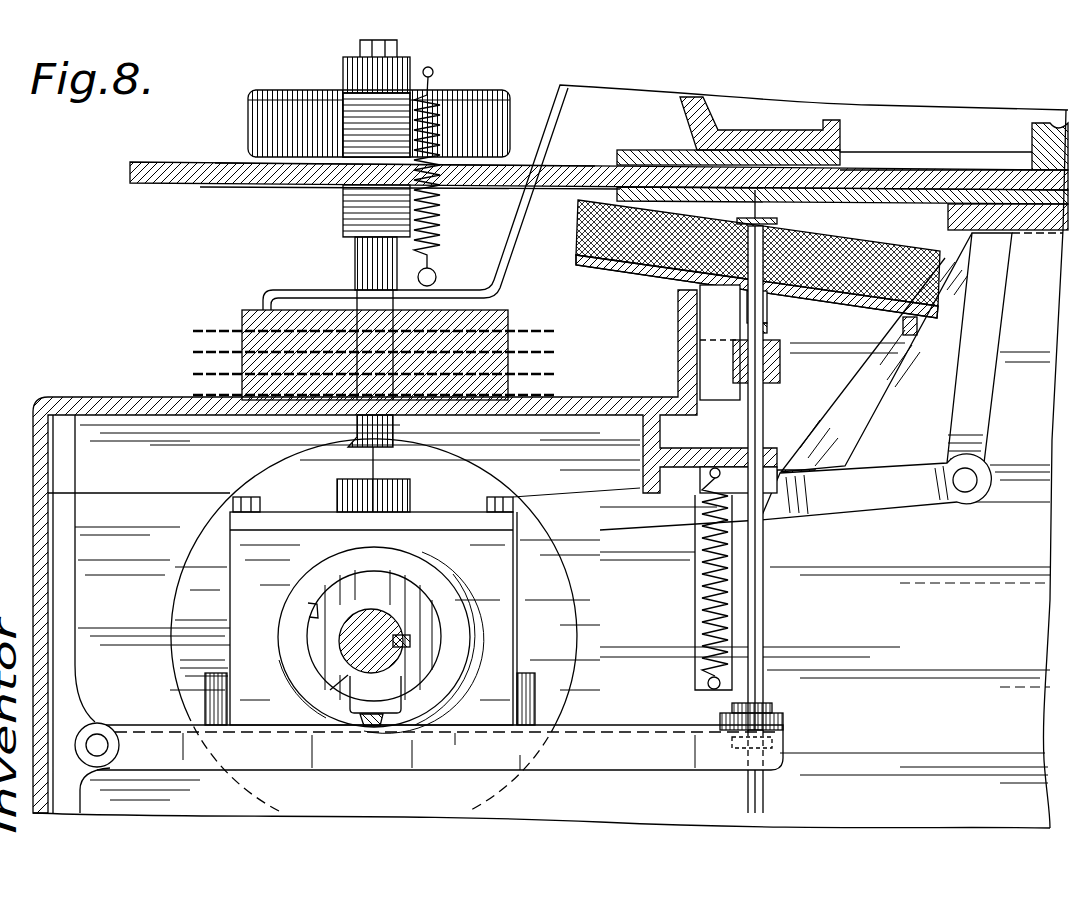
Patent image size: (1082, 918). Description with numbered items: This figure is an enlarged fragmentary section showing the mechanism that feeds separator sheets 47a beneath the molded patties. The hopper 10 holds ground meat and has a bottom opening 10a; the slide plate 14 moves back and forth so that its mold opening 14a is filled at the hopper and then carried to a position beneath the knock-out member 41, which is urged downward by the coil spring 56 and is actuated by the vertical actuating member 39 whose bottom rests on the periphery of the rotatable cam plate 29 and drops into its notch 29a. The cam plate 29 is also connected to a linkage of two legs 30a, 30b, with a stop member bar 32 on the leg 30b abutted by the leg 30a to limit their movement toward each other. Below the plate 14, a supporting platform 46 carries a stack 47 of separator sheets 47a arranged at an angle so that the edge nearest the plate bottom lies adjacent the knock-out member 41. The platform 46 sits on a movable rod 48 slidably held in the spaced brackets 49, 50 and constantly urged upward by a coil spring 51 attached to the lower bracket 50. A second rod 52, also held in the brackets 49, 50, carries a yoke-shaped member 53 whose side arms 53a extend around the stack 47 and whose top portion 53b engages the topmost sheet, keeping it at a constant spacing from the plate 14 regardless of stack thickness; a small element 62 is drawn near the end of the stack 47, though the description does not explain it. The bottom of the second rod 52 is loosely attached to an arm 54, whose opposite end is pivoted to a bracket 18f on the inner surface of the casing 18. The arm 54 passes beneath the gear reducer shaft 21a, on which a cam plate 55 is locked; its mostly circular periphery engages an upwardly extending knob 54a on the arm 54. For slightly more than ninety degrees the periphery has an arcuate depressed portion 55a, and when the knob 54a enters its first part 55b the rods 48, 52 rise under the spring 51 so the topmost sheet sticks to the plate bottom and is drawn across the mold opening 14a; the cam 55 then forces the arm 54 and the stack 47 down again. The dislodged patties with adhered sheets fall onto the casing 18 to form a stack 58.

The hopper 10 is at (696, 110).
The bottom opening 10a is at (843, 141).
The slide plate 14 is at (130, 168).
The mold opening 14a is at (236, 162).
The separator sheets 47a is at (220, 189).
The knock-out member 41 is at (478, 113).
The actuating member 39 is at (370, 263).
The coil spring 56 is at (440, 247).
The stack of patties 58 is at (238, 322).
The casing 18 is at (96, 396).
The stack of separator sheets 47 is at (580, 229).
The supporting platform 46 is at (604, 264).
The movable rod 48 is at (712, 313).
The top portion 53b is at (757, 217).
The side arms 53a is at (767, 312).
The yoke-shaped member 53 is at (767, 327).
The stop 62 is at (902, 326).
The bracket 49 is at (780, 362).
The stop member bar 32 is at (874, 375).
The leg 30b is at (978, 401).
The leg 30a is at (903, 488).
The lower bracket 50 is at (776, 494).
The second rod 52 is at (764, 596).
The coil spring 51 is at (697, 612).
The notch 29a is at (372, 458).
The cam plate 29 is at (557, 610).
The gear reducer shaft 21a is at (389, 626).
The first part 55b is at (307, 611).
The arcuate depressed portion 55a is at (328, 686).
The cam plate 55 is at (421, 663).
The bracket 18f is at (98, 722).
The knob 54a is at (366, 724).
The arm 54 is at (621, 748).